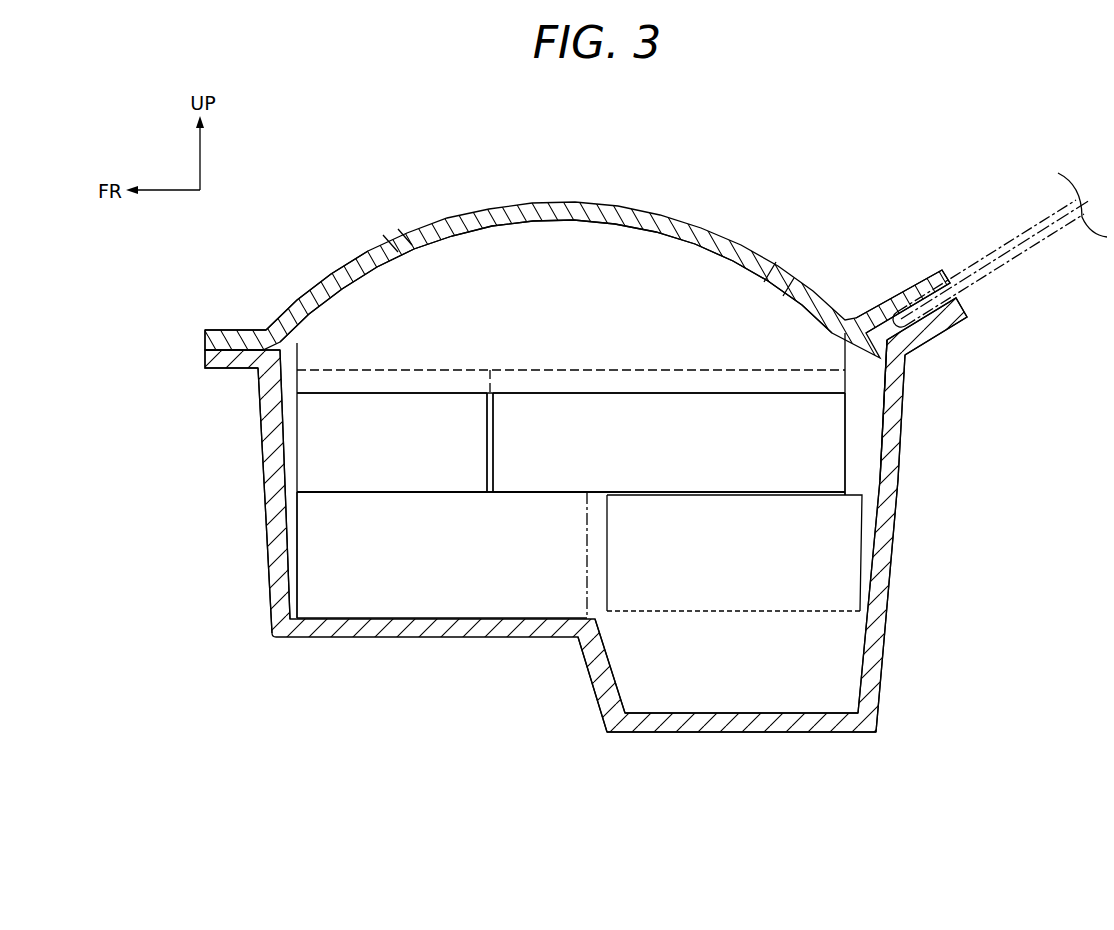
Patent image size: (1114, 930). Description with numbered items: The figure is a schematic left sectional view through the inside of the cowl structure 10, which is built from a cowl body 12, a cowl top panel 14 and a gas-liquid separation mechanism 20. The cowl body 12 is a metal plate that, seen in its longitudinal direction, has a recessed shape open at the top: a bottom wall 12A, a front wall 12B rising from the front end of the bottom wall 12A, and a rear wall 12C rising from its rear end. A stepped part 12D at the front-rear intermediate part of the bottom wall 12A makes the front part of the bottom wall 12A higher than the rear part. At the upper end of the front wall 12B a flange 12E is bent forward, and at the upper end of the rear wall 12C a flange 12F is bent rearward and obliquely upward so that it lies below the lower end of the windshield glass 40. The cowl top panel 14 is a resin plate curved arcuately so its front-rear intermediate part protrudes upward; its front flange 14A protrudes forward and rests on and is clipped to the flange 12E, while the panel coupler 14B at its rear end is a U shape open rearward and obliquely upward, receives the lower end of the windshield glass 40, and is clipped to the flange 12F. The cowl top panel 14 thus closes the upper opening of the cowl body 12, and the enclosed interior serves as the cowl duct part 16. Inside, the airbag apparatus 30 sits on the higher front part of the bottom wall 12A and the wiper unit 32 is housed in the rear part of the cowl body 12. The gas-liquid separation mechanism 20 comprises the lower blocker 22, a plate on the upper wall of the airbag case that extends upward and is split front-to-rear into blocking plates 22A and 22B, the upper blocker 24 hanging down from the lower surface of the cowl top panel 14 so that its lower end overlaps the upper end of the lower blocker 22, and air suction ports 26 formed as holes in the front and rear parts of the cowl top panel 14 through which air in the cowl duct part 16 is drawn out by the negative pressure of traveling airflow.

The cowl structure 10 is at (791, 158).
The cowl body 12 is at (388, 645).
The bottom wall 12A is at (735, 736).
The front wall 12B is at (270, 547).
The rear wall 12C is at (887, 600).
The stepped part 12D is at (583, 672).
The flange 12E is at (215, 372).
The flange 12F is at (947, 340).
The cowl top panel 14 is at (593, 192).
The flange 14A is at (220, 327).
The panel coupler 14B is at (898, 290).
The cowl duct part 16 is at (551, 456).
The gas-liquid separation mechanism 20 is at (874, 435).
The lower blocker 22 is at (571, 442).
The blocking plate 22A is at (340, 455).
The blocking plate 22B is at (813, 470).
The upper blocker 24 is at (518, 255).
The air suction ports 26 is at (390, 237).
The airbag apparatus 30 is at (292, 568).
The wiper unit 32 is at (867, 557).
The windshield glass 40 is at (1015, 235).